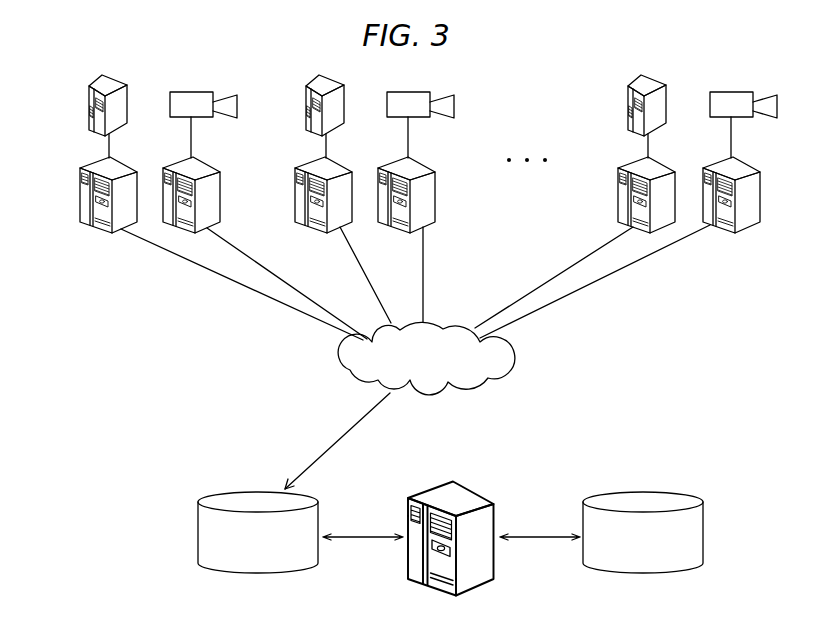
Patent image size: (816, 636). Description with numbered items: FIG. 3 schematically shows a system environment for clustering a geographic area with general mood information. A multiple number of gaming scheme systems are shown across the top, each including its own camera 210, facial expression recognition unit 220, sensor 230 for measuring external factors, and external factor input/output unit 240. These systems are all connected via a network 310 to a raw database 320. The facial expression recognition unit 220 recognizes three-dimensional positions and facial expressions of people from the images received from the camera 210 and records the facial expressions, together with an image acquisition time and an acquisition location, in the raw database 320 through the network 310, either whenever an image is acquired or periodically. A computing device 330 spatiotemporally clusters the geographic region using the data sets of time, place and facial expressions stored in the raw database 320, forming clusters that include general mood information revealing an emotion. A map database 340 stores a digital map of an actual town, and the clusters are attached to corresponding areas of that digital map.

The camera 210 is at (237, 104).
The facial expression recognition unit 220 is at (221, 193).
The sensor 230 is at (88, 106).
The external factor input/output unit 240 is at (80, 192).
The network 310 is at (457, 323).
The raw database 320 is at (318, 503).
The computing device 330 is at (470, 490).
The map database 340 is at (676, 492).